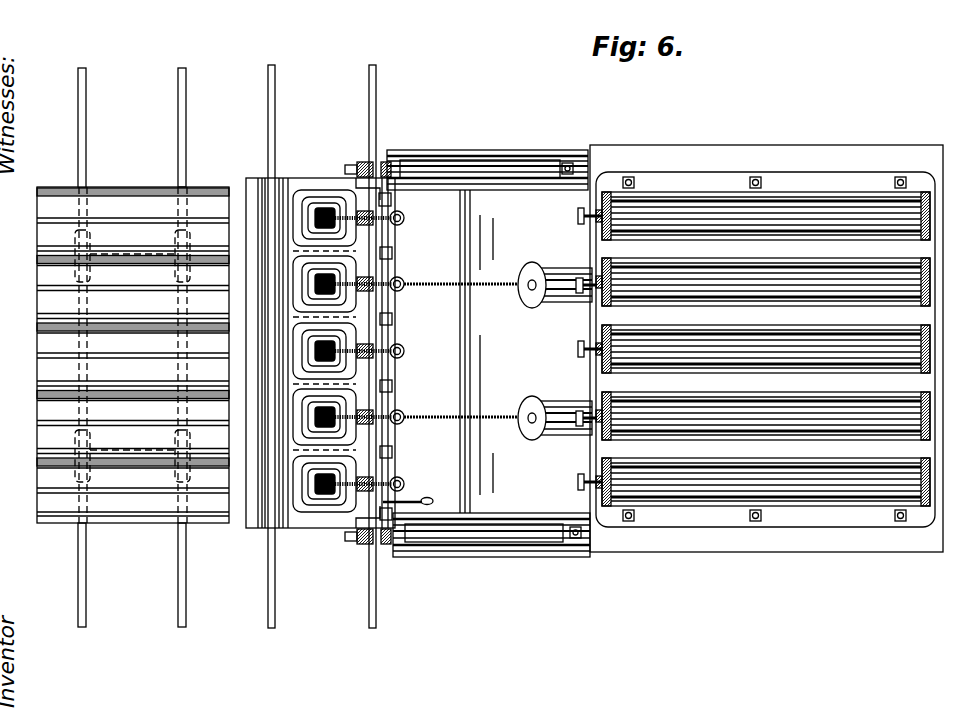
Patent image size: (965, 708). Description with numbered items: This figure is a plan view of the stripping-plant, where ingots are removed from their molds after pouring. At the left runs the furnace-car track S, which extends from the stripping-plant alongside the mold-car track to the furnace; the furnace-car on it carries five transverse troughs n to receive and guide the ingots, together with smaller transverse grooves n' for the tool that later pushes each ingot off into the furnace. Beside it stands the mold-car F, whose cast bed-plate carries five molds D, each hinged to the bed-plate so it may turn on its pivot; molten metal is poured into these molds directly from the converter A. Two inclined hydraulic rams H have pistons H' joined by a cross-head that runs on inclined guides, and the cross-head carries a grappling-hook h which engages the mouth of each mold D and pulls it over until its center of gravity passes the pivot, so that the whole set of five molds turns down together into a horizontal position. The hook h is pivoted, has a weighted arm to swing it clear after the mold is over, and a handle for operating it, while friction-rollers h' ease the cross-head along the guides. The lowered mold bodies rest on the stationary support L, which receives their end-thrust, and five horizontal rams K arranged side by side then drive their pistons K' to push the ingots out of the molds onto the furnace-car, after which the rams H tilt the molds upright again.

The furnace-car track S is at (133, 347).
The transverse troughs n is at (116, 327).
The transverse grooves n' is at (133, 367).
The converter A is at (322, 346).
The mold-car F is at (255, 528).
The mold D is at (318, 205).
The hook or grappling device h is at (368, 351).
The wheels or friction-rollers h' is at (377, 352).
The inclined hydraulic ram H is at (557, 335).
The piston H' is at (463, 350).
The hydraulic ram K is at (766, 349).
The piston K' is at (571, 347).
The stationary platform or support L is at (496, 482).